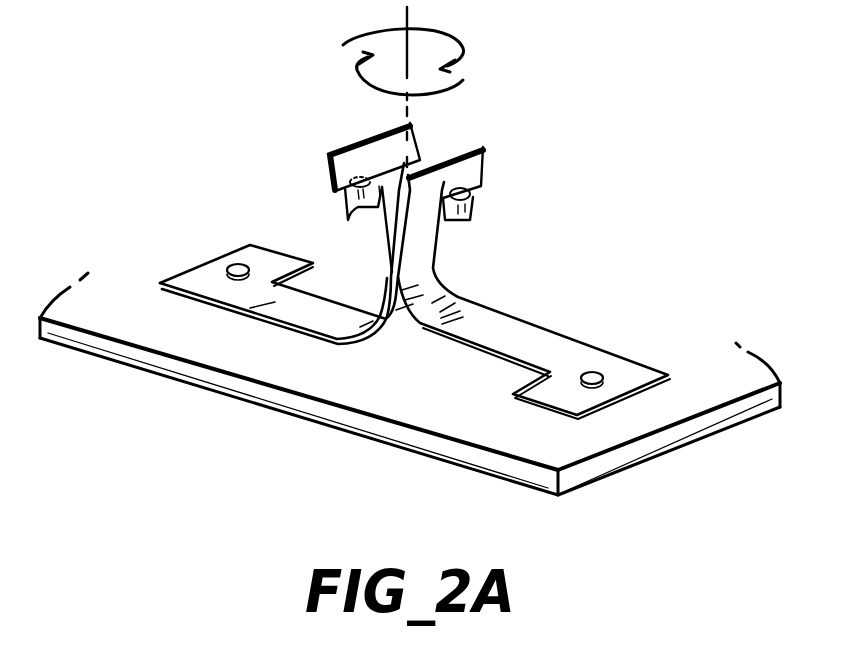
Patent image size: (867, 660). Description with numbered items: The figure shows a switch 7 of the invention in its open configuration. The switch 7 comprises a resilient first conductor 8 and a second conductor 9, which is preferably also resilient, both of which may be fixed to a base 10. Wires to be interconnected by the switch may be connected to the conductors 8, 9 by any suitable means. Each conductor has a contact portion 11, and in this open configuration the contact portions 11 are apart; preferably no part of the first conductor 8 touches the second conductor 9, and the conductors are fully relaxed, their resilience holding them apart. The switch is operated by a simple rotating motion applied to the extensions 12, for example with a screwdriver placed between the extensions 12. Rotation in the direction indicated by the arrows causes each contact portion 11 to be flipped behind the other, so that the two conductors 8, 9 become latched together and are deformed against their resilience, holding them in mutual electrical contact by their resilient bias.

The switch 7 is at (538, 294).
The first conductor 8 is at (275, 302).
The second conductor 9 is at (582, 355).
The base 10 is at (407, 395).
The contact portions 11 is at (345, 213).
The extensions 12 is at (370, 150).